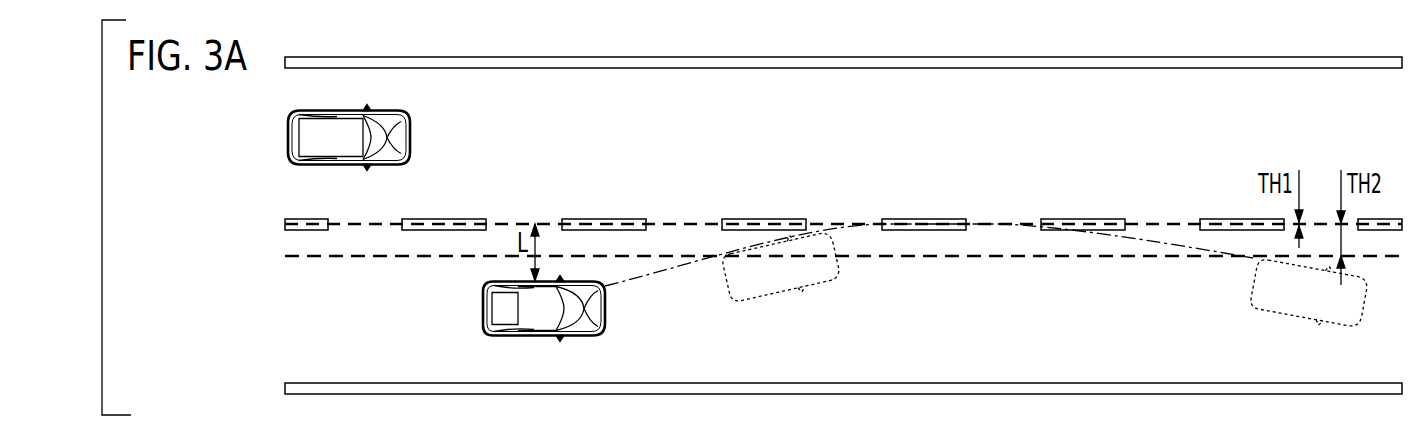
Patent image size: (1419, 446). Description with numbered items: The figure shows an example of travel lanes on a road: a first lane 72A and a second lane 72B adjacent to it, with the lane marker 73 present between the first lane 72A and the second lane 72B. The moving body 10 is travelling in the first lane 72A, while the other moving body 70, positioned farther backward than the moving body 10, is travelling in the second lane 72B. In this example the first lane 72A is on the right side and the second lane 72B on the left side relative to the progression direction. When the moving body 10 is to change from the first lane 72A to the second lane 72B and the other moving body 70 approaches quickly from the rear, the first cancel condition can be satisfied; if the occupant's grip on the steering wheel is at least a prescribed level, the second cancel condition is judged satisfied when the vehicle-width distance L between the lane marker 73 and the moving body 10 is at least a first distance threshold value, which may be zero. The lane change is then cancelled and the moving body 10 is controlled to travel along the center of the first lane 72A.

The moving body 10 is at (493, 311).
The other moving body 70 is at (398, 130).
The first lane 72A is at (306, 338).
The second lane 72B is at (306, 190).
The lane marker 73 is at (470, 217).